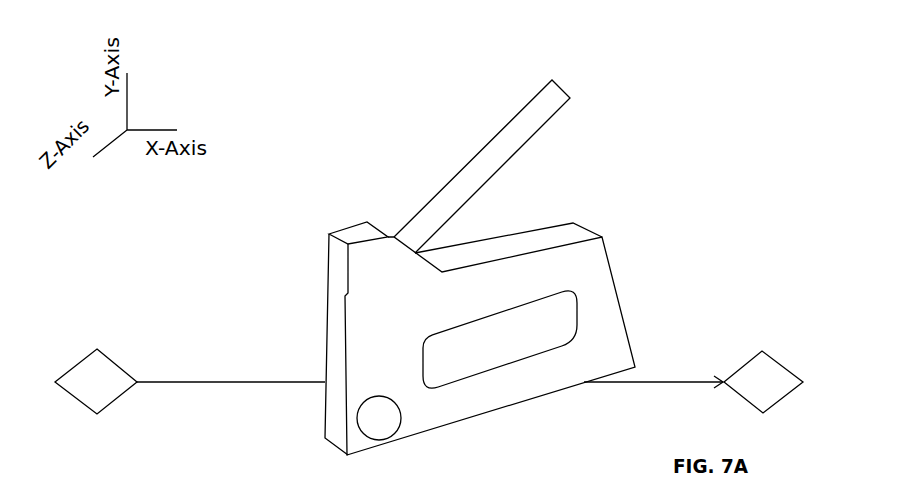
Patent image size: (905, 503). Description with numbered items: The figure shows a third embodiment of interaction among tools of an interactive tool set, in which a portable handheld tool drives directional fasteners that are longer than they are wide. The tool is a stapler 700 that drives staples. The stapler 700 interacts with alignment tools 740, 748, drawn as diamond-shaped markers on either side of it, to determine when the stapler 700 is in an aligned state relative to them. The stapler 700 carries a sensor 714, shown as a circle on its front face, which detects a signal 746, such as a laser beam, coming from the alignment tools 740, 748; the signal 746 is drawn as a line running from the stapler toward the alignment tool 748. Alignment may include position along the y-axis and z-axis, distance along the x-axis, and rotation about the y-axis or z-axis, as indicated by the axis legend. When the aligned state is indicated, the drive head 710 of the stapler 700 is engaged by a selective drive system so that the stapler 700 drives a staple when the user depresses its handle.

The stapler 700 is at (578, 225).
The drive head 710 is at (337, 448).
The sensor 714 is at (379, 440).
The alignment tool 740 is at (97, 349).
The signal 746 is at (637, 382).
The alignment tool 748 is at (762, 351).